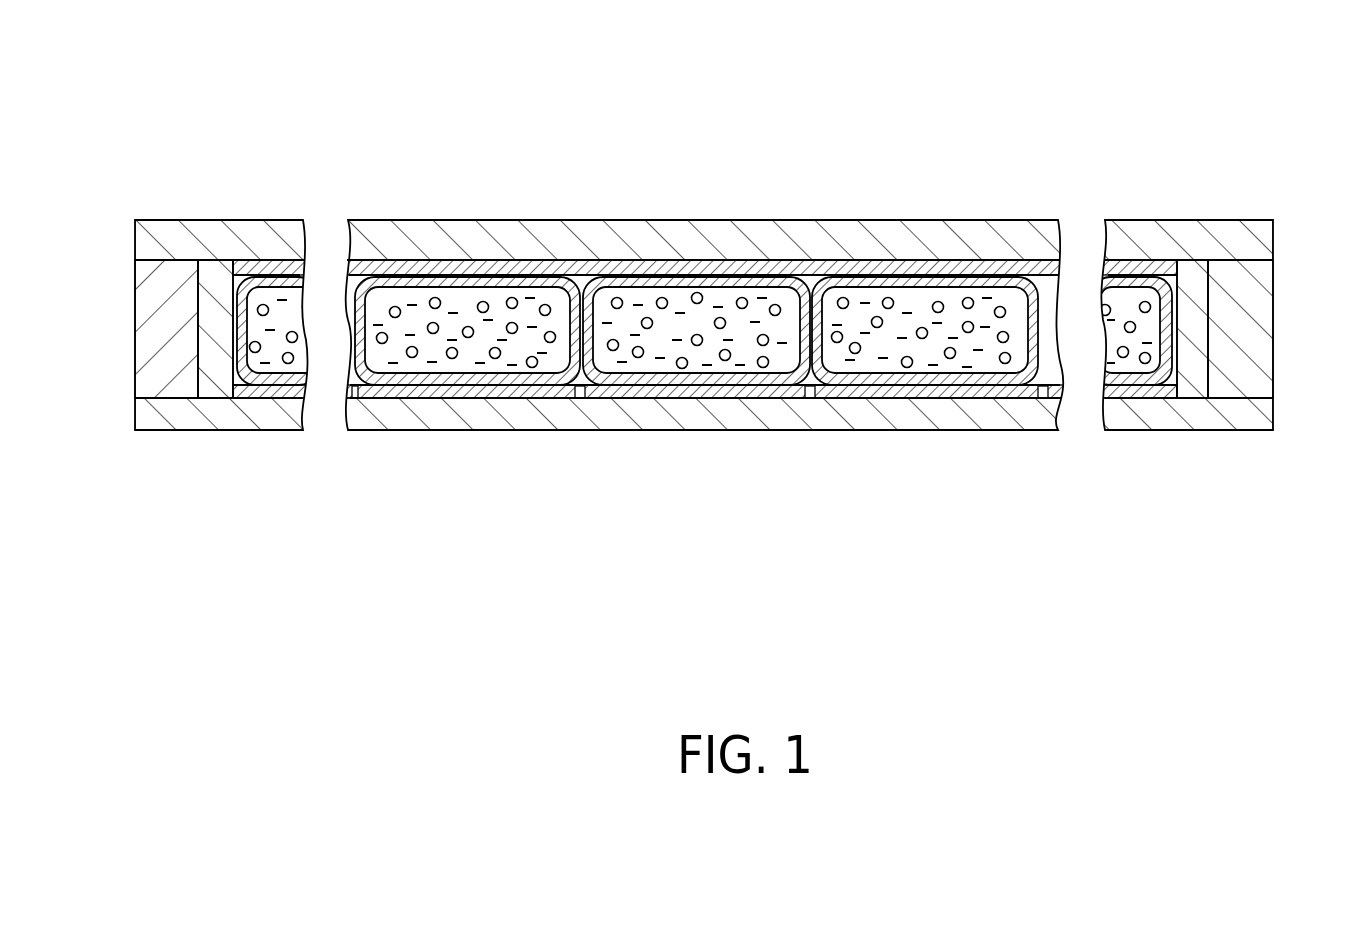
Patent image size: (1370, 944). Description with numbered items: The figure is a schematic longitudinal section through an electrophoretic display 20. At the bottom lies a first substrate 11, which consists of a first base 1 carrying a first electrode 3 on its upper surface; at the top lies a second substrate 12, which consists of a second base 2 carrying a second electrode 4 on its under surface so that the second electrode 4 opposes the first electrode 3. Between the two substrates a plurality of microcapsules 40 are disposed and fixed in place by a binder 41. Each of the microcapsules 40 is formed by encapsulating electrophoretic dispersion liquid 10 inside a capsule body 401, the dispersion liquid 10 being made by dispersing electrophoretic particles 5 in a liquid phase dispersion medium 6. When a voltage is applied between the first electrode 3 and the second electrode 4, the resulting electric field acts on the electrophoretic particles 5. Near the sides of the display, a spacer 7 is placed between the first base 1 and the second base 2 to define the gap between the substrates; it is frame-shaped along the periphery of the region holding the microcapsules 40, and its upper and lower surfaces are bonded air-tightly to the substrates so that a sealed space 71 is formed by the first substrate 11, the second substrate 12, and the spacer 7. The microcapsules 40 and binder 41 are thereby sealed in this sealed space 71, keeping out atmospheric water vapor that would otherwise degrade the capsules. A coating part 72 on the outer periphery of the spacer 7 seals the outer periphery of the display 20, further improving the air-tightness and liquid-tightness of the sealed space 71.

The first base 1 is at (770, 412).
The second base 2 is at (845, 248).
The first electrode 3 is at (757, 393).
The second electrode 4 is at (704, 331).
The electrophoretic particles 5 is at (415, 358).
The liquid phase dispersion medium 6 is at (510, 352).
The spacer 7 is at (218, 375).
The electrophoretic dispersion liquid 10 is at (701, 416).
The first substrate 11 is at (705, 478).
The second substrate 12 is at (705, 306).
The electrophoretic display 20 is at (705, 307).
The microcapsules 40 is at (597, 272).
The binder 41 is at (370, 262).
The coating part 72 is at (165, 333).
The sealed space 71 is at (1183, 268).
The capsule body 401 is at (480, 268).